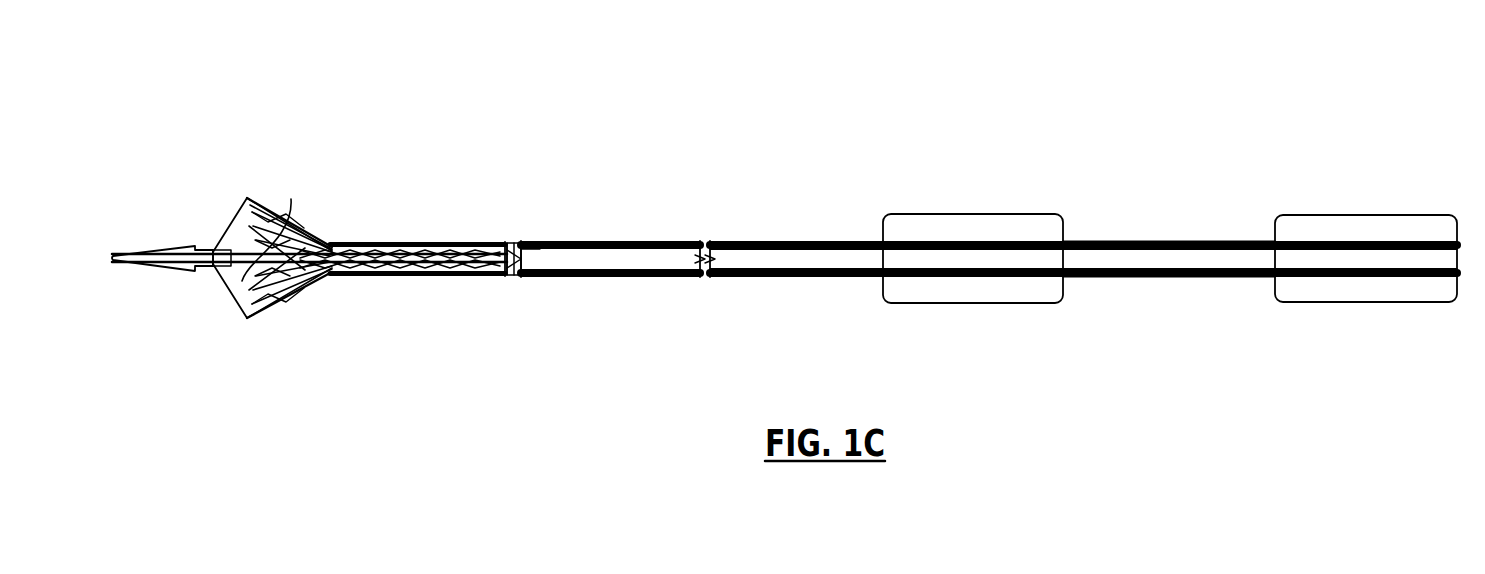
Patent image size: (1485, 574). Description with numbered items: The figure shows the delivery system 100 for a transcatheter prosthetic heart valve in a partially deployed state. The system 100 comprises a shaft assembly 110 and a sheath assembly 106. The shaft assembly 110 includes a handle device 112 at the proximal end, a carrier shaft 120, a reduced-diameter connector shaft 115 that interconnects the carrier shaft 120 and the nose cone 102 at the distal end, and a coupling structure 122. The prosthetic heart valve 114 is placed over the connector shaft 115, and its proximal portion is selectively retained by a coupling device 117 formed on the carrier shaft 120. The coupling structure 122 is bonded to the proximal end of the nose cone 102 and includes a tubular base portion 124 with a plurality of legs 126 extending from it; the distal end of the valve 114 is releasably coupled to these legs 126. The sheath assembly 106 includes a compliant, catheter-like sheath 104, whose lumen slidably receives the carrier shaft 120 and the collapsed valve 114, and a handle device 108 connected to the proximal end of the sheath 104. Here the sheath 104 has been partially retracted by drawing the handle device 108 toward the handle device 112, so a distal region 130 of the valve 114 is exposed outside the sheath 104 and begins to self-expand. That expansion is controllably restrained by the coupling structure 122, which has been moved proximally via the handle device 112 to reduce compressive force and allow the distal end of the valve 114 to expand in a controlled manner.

The system 100 is at (297, 109).
The nose cone 102 is at (160, 243).
The sheath 104 is at (620, 240).
The sheath assembly 106 is at (804, 240).
The handle device 108 is at (963, 214).
The shaft assembly 110 is at (1208, 240).
The handle device 112 is at (1328, 215).
The prosthetic heart valve 114 is at (420, 278).
The connector shaft 115 is at (490, 278).
The coupling device 117 is at (506, 240).
The carrier shaft 120 is at (1118, 258).
The coupling structure 122 is at (213, 279).
The tubular base portion 124 is at (228, 250).
The legs 126 is at (273, 200).
The distal region 130 is at (302, 214).